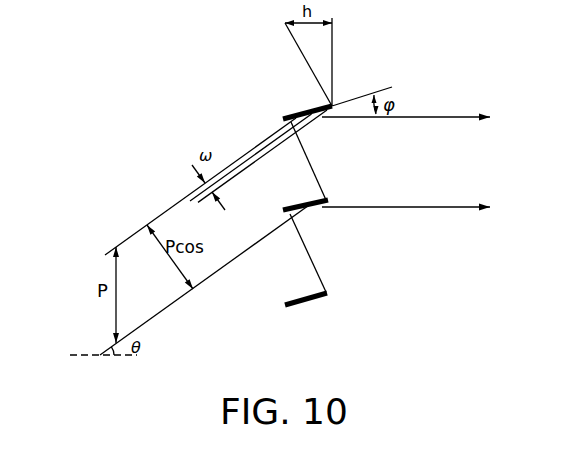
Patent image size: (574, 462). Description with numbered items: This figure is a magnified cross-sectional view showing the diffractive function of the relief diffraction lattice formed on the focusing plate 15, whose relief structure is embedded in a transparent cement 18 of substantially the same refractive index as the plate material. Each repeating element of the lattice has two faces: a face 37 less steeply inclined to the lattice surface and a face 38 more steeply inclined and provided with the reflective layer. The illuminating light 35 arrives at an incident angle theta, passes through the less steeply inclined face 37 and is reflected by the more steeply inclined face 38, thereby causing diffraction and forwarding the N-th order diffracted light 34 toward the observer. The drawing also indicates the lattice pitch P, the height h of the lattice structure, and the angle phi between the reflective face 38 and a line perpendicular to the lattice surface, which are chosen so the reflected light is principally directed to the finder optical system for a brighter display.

The N-th order diffracted light 34 is at (445, 116).
The face less steeply inclined to the lattice surface 37 is at (318, 183).
The face more steeply inclined 38 is at (322, 212).
The illuminating light 35 is at (168, 309).
The focusing plate 15 is at (297, 288).
The transparent cement 18 is at (365, 285).